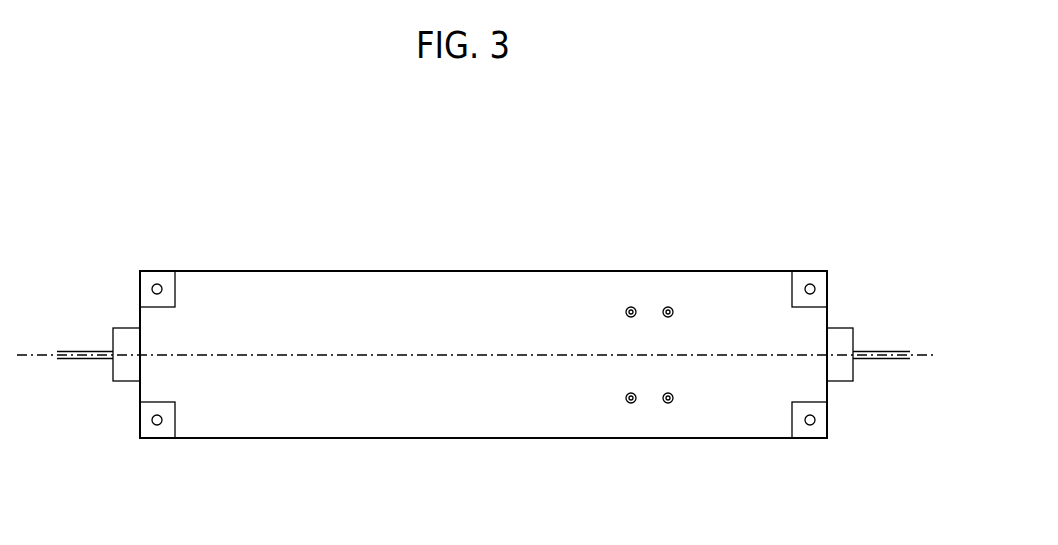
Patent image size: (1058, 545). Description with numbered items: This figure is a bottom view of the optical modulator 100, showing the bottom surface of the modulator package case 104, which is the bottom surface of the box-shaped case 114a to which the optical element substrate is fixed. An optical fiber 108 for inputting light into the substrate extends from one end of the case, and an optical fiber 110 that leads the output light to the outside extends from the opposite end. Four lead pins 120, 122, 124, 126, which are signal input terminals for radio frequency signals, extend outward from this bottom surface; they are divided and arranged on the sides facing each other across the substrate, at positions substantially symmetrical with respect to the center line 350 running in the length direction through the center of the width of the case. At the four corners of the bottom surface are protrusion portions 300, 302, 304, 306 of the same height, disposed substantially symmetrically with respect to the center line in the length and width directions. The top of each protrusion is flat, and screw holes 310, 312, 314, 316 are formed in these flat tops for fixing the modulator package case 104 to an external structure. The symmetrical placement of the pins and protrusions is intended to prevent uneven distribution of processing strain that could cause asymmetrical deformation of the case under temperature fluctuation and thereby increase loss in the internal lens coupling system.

The optical modulator 100 is at (178, 134).
The modulator package case 104 is at (483, 297).
The case 114a is at (483, 313).
The optical fiber 108 is at (870, 396).
The optical fiber 110 is at (98, 397).
The lead pin 120 is at (587, 452).
The lead pin 122 is at (651, 456).
The lead pin 124 is at (585, 265).
The lead pin 126 is at (652, 256).
The protrusion portion 300 is at (181, 261).
The protrusion portion 302 is at (788, 260).
The protrusion portion 304 is at (186, 458).
The protrusion portion 306 is at (782, 457).
The screw hole 310 is at (138, 255).
The screw hole 312 is at (836, 254).
The screw hole 314 is at (135, 463).
The screw hole 316 is at (833, 463).
The center line 350 is at (476, 320).